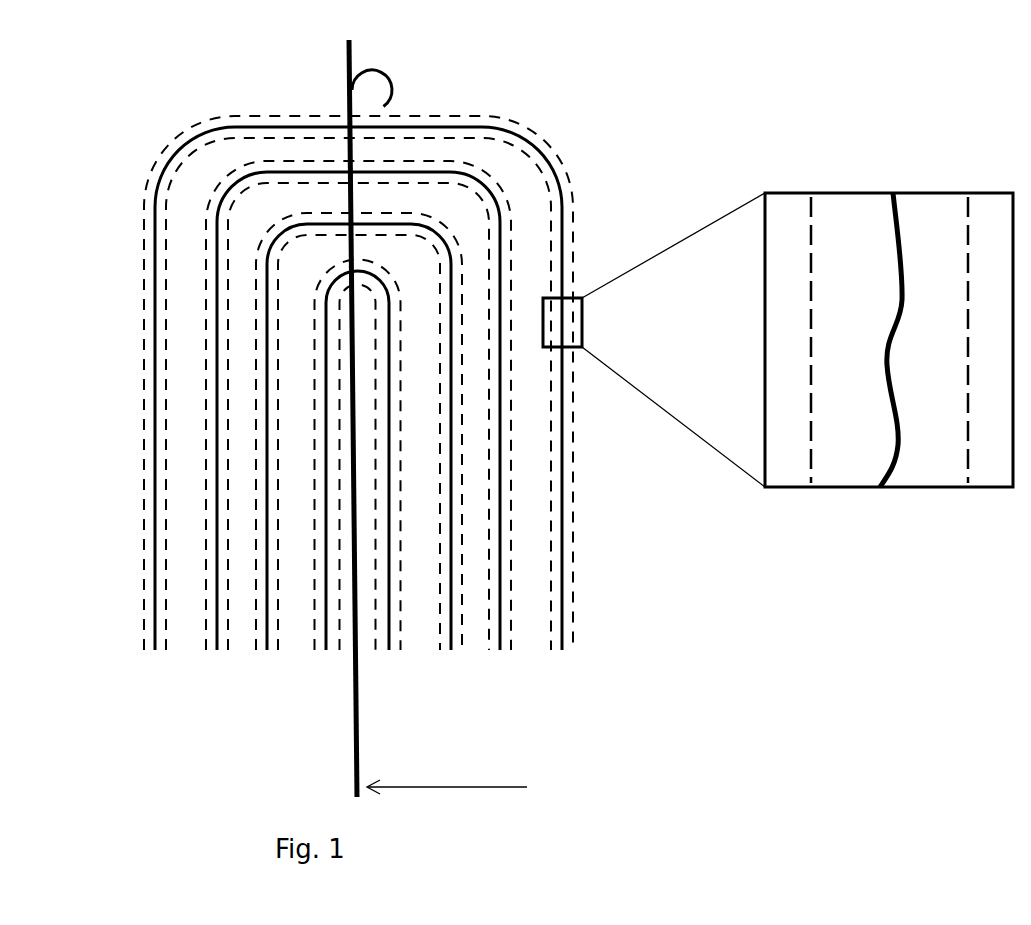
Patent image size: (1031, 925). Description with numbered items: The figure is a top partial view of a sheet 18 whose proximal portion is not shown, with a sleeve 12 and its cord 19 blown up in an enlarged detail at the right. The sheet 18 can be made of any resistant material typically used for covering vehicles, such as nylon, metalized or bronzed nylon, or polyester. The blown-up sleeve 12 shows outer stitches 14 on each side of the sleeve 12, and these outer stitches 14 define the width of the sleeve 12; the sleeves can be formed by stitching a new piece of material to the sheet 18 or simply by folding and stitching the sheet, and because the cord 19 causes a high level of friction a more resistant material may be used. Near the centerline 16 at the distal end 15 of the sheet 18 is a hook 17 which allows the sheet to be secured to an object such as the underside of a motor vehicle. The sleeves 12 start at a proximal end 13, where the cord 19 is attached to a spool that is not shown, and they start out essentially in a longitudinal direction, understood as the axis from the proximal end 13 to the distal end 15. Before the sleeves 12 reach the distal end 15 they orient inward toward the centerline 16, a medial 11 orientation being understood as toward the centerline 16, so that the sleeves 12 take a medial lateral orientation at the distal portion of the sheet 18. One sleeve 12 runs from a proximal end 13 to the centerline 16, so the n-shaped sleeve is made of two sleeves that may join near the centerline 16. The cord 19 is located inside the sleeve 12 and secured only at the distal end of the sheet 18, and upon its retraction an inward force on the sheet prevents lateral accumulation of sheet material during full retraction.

The medial orientation 11 is at (481, 787).
The sleeve 12 is at (779, 385).
The proximal end 13 is at (409, 388).
The outer stitches 14 is at (812, 480).
The distal end 15 is at (265, 96).
The centerline 16 is at (357, 662).
The hook 17 is at (388, 82).
The sheet 18 is at (515, 172).
The cord 19 is at (900, 467).